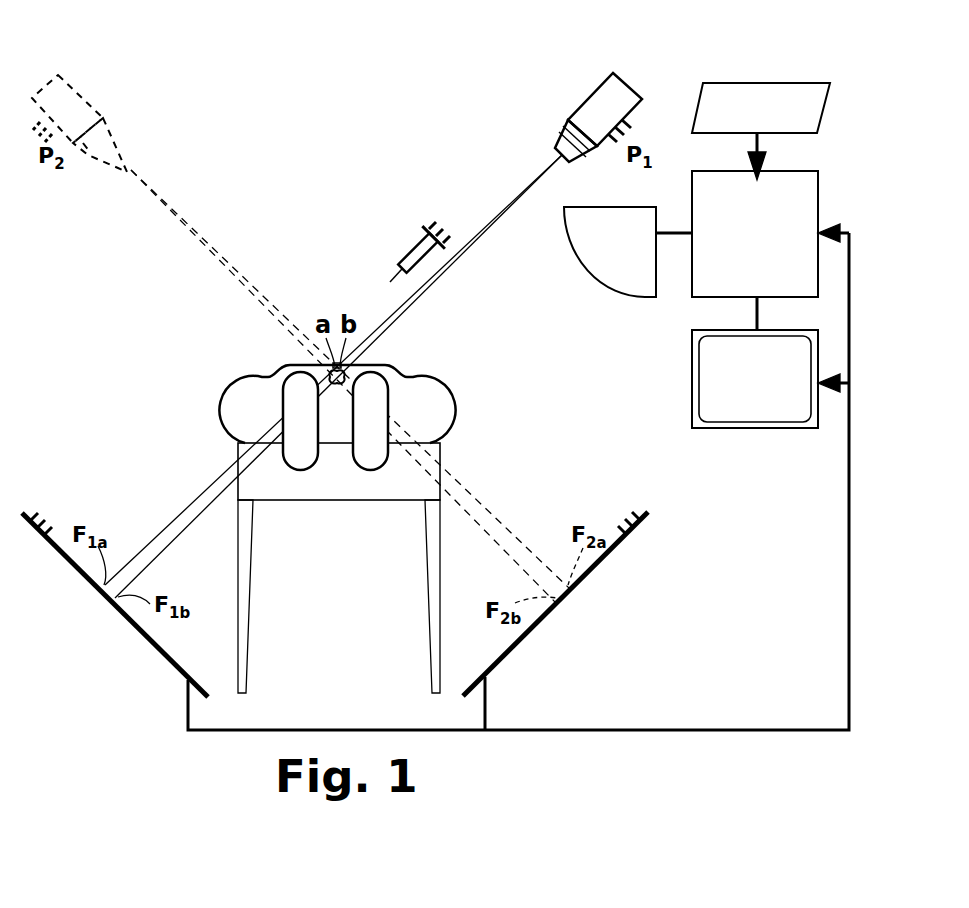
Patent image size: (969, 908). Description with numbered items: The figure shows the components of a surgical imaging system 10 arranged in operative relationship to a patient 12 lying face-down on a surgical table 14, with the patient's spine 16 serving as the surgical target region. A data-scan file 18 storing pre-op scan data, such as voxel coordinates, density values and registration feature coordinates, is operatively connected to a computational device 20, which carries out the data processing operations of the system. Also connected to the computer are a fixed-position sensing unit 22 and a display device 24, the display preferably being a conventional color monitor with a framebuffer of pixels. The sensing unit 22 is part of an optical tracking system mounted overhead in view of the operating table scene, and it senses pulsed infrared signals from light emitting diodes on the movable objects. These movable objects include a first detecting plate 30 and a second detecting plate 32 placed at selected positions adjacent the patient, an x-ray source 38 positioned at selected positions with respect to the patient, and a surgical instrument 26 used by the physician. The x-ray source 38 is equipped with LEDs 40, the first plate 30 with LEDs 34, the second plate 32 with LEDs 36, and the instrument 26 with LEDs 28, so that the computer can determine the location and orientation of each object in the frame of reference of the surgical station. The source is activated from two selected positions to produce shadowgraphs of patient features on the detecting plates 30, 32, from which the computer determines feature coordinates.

The system 10 is at (644, 327).
The patient 12 is at (440, 395).
The surgical table 14 is at (324, 500).
The spine 16 is at (356, 372).
The data-scan file 18 is at (746, 82).
The computational device 20 is at (820, 183).
The fixed-position sensing unit 22 is at (588, 268).
The display device 24 is at (690, 408).
The surgical instrument 26 is at (405, 265).
The LEDs 28 is at (440, 228).
The first detecting plate 30 is at (155, 647).
The second detecting plate 32 is at (515, 648).
The LEDs 34 is at (38, 516).
The LEDs 36 is at (628, 516).
The x-ray source 38 is at (580, 108).
The LEDs 40 is at (632, 132).